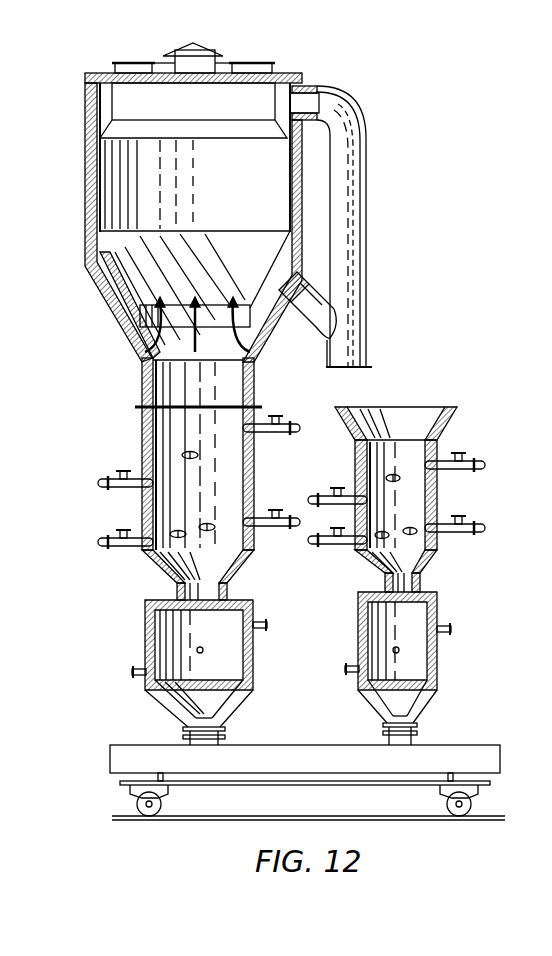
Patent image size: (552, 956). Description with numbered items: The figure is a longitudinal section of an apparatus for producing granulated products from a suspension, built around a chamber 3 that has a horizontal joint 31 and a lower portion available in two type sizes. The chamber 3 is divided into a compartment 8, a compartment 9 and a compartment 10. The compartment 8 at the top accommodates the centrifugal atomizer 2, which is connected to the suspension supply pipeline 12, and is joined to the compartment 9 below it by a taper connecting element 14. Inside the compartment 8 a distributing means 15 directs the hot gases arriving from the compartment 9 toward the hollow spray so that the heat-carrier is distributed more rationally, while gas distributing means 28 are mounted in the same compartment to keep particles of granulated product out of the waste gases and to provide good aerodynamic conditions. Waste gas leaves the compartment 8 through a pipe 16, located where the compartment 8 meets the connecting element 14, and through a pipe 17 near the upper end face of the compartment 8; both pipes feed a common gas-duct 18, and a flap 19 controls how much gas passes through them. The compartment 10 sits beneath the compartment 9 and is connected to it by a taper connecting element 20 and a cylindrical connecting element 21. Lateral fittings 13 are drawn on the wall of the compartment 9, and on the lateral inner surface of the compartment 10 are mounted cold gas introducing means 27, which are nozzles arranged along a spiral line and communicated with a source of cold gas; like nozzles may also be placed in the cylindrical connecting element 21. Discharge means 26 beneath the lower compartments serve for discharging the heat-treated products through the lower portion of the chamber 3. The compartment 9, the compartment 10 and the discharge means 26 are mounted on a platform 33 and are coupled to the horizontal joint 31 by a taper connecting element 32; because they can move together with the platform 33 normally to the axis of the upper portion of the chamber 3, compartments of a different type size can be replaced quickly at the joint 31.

The centrifugal atomizer 2 is at (150, 305).
The chamber 3 is at (84, 133).
The compartment 8 is at (86, 200).
The compartment 9 is at (142, 376).
The compartment 10 is at (147, 632).
The suspension supply pipeline 12 is at (130, 355).
The nozzle 13 is at (138, 476).
The taper connecting element 14 is at (112, 292).
The distributing means 15 is at (130, 242).
The pipe 16 is at (292, 284).
The pipe 17 is at (308, 86).
The common gas-duct 18 is at (356, 295).
The flap 19 is at (345, 183).
The taper connecting element 20 is at (148, 566).
The cylindrical connecting element 21 is at (176, 592).
The discharge means 26 is at (500, 746).
The cold gas introducing means 27 is at (140, 672).
The gas distributing means 28 is at (122, 100).
The horizontal joint 31 is at (165, 405).
The taper connecting element 32 is at (452, 412).
The platform 33 is at (128, 789).